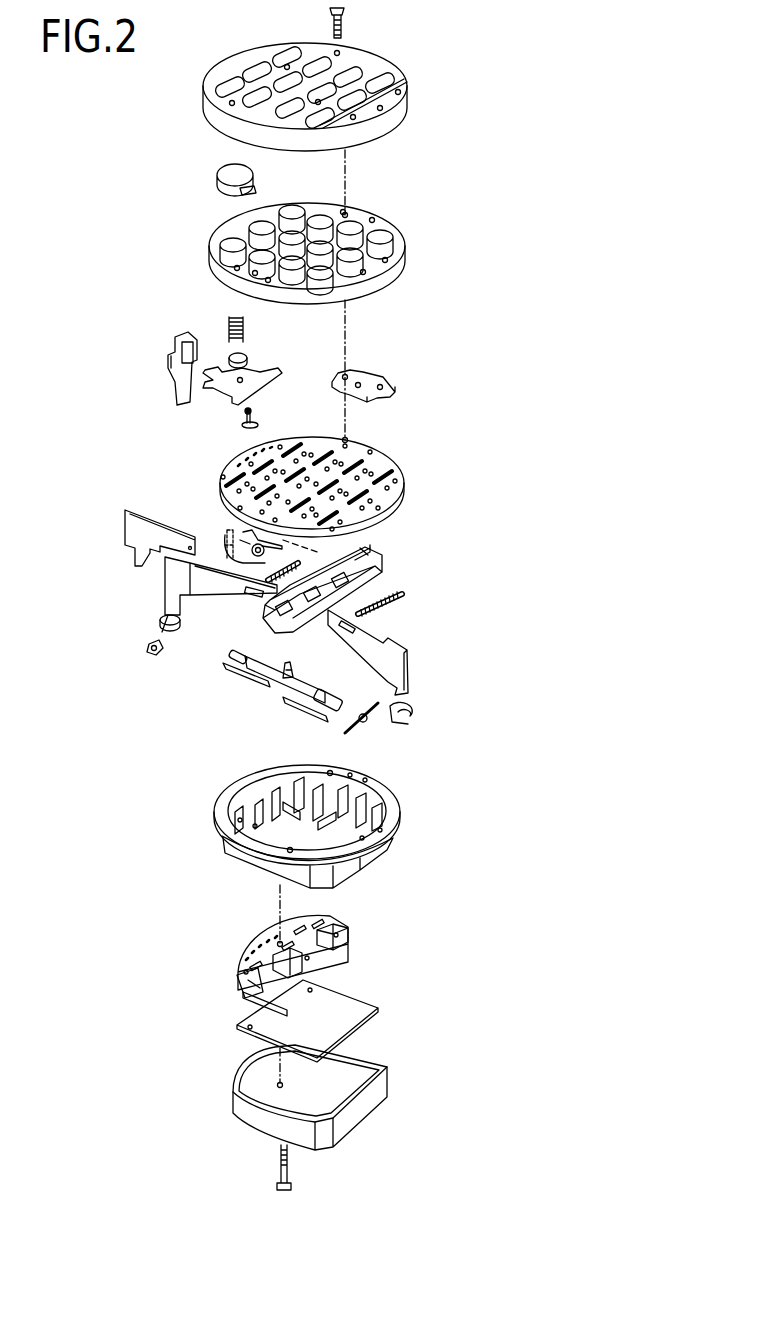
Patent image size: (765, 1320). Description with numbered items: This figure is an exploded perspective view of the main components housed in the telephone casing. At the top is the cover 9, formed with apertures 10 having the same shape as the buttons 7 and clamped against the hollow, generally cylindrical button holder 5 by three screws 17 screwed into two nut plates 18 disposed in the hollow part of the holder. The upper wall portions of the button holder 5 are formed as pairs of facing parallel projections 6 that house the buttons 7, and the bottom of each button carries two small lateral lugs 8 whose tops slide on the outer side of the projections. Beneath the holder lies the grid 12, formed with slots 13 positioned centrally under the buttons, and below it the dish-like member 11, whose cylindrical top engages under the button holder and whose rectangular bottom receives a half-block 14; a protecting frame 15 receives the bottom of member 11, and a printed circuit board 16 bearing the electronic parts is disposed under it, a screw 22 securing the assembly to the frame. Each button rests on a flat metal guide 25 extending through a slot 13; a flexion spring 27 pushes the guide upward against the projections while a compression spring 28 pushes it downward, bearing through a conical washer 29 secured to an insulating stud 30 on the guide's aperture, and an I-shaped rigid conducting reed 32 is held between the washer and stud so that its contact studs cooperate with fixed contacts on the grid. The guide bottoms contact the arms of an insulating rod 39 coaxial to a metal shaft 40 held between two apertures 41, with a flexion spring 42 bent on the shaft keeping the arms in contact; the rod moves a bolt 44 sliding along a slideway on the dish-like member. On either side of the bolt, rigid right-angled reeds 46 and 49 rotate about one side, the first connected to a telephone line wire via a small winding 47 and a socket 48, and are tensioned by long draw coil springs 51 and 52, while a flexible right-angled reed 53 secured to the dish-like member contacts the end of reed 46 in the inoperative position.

The button holder 5 is at (406, 241).
The parallel projections 6 is at (216, 238).
The button 7 is at (222, 166).
The lateral lugs 8 is at (256, 190).
The cover 9 is at (402, 95).
The apertures 10 is at (233, 84).
The dish-like member 11 is at (400, 813).
The grid 12 is at (405, 472).
The slots 13 is at (362, 499).
The half-block 14 is at (255, 925).
The protecting frame 15 is at (233, 1068).
The printed circuit board 16 is at (380, 1010).
The screws 17 is at (342, 26).
The nut plates 18 is at (392, 379).
The screw 22 is at (280, 1163).
The flat metal guide 25 is at (170, 345).
The flexion spring 27 is at (225, 542).
The compression spring 28 is at (246, 328).
The conical washer 29 is at (248, 359).
The stud 30 is at (240, 421).
The rigid conducting reed 32 is at (268, 385).
The rod 39 is at (272, 684).
The metal shaft 40 is at (244, 654).
The apertures 41 is at (325, 960).
The flexion spring 42 is at (367, 726).
The bolt 44 is at (383, 561).
The right-angled reed 46 is at (165, 582).
The small winding 47 is at (163, 619).
The socket 48 is at (147, 648).
The right-angled reed 49 is at (408, 666).
The draw coil spring 51 is at (240, 544).
The draw coil spring 52 is at (394, 603).
The flexible right-angled reed 53 is at (125, 518).